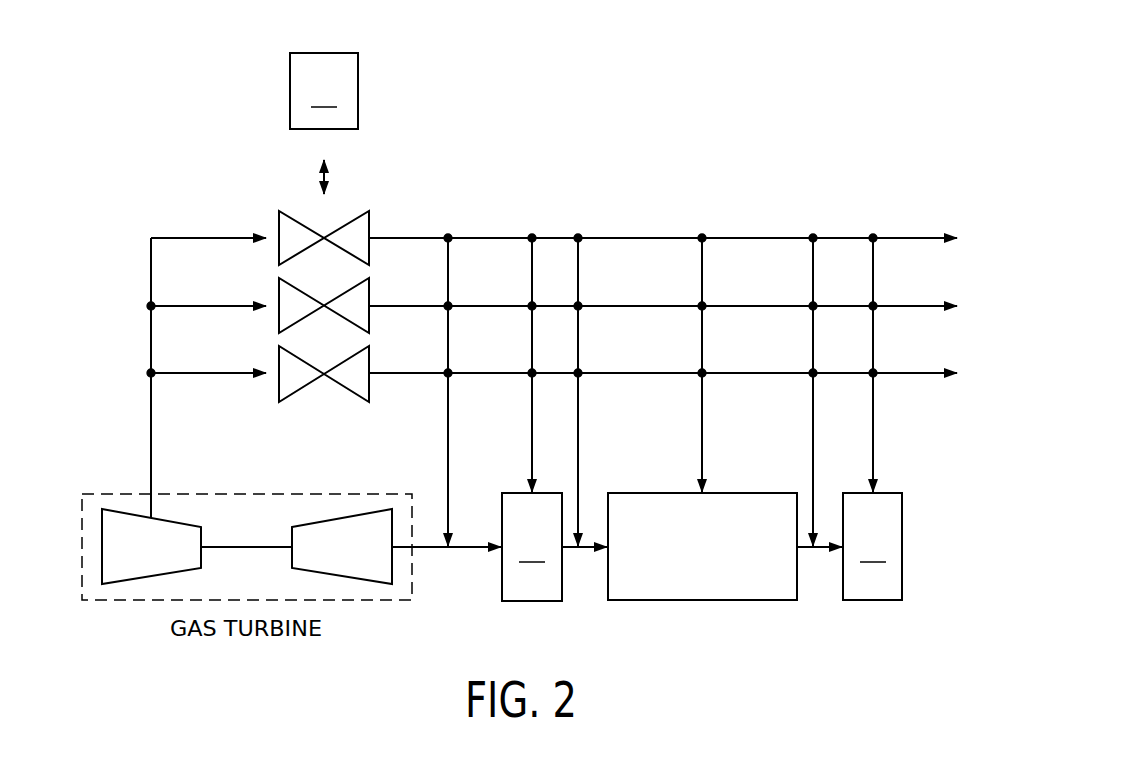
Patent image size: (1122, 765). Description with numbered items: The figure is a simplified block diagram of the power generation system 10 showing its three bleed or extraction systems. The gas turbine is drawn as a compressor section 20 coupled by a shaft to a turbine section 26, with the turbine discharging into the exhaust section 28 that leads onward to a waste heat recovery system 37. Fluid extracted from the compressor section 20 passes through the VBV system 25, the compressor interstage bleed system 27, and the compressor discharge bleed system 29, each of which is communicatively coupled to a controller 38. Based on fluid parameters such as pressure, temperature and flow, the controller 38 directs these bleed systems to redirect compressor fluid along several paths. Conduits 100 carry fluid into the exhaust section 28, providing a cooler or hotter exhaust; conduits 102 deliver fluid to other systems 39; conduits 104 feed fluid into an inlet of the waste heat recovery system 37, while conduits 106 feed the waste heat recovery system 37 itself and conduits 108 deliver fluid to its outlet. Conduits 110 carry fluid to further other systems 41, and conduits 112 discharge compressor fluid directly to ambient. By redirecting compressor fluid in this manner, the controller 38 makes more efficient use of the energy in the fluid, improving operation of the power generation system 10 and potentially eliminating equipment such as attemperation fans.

The power generation system 10 is at (826, 96).
The compressor section 20 is at (150, 574).
The VBV system 25 is at (279, 249).
The turbine section 26 is at (343, 575).
The compressor interstage bleed system 27 is at (279, 317).
The exhaust section 28 is at (470, 550).
The compressor discharge bleed system 29 is at (279, 385).
The waste heat recovery system 37 is at (698, 602).
The controller 38 is at (324, 123).
The other systems 39 is at (532, 547).
The other systems 41 is at (872, 546).
The conduits 100 is at (448, 460).
The conduits 102 is at (532, 420).
The conduits 104 is at (578, 422).
The conduits 106 is at (702, 445).
The conduits 108 is at (813, 430).
The conduits 110 is at (873, 420).
The conduits 112 is at (912, 238).